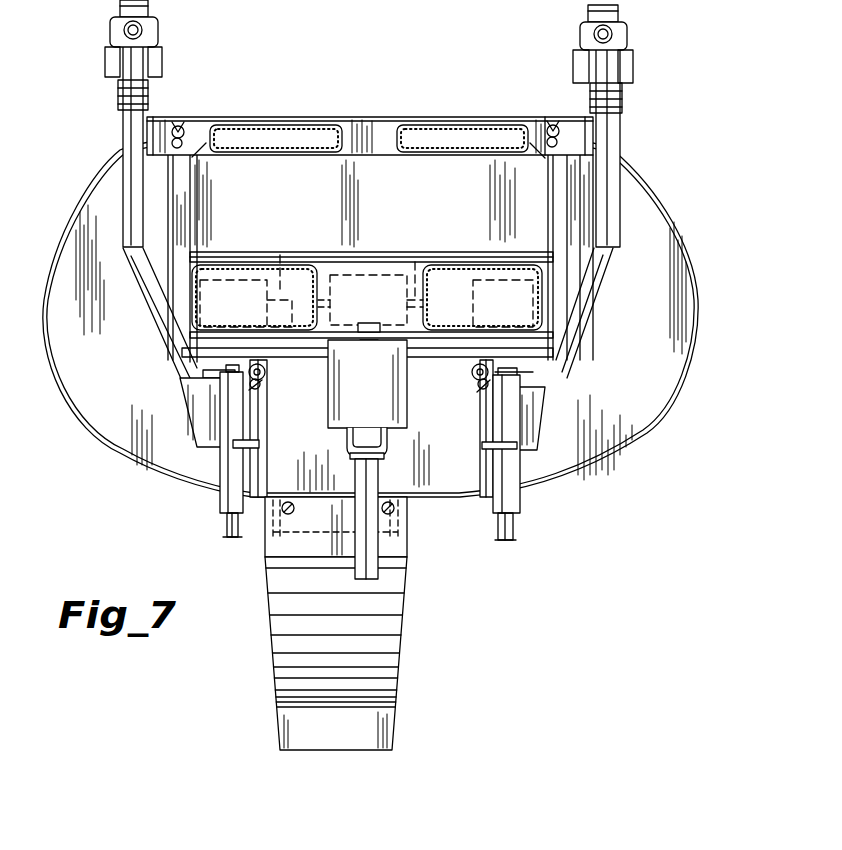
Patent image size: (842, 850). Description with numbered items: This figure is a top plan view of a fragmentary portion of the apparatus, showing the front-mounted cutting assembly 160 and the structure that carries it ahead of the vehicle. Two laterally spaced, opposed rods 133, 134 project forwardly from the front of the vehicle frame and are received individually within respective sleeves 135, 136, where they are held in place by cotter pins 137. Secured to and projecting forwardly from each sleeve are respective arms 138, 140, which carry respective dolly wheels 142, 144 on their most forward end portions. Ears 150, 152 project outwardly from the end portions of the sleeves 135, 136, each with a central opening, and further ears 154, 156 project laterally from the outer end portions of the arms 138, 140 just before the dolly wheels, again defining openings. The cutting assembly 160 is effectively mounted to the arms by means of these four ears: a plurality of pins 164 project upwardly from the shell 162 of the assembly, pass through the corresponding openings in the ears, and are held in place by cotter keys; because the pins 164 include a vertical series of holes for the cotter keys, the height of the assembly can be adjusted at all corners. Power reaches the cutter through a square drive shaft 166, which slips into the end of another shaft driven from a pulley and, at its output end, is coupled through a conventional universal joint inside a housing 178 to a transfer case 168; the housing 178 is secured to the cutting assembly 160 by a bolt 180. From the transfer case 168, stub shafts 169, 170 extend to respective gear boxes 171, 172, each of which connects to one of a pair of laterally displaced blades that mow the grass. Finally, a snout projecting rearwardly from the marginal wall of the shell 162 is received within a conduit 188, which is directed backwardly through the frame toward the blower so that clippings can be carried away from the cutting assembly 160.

The rod 133 is at (232, 532).
The rod 134 is at (513, 536).
The sleeve 135 is at (223, 505).
The sleeve 136 is at (517, 501).
The cotter pin 137 is at (201, 373).
The arm 138 is at (129, 270).
The arm 140 is at (603, 292).
The dolly wheel 142 is at (110, 92).
The dolly wheel 144 is at (621, 106).
The ear 150 is at (266, 373).
The ear 152 is at (472, 373).
The ear 154 is at (160, 127).
The ear 156 is at (548, 128).
The cutting assembly 160 is at (708, 286).
The shell 162 is at (655, 405).
The pin 164 is at (193, 145).
The drive shaft 166 is at (374, 571).
The transfer case 168 is at (364, 275).
The stub shaft 169 is at (282, 285).
The stub shaft 170 is at (415, 262).
The gear box 171 is at (228, 278).
The gear box 172 is at (498, 280).
The housing 178 is at (327, 413).
The bolt 180 is at (362, 356).
The conduit 188 is at (400, 681).